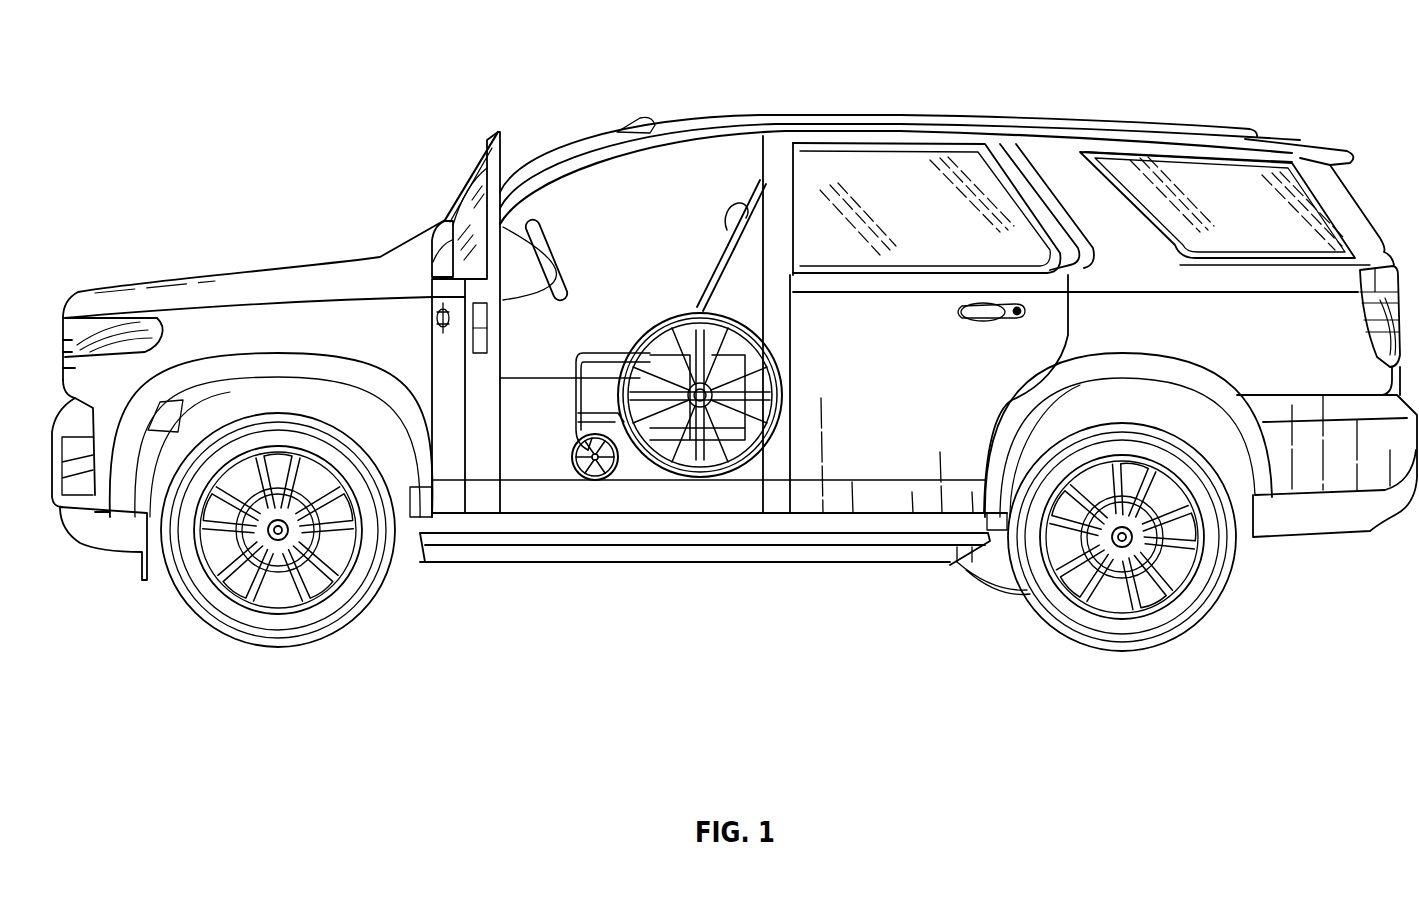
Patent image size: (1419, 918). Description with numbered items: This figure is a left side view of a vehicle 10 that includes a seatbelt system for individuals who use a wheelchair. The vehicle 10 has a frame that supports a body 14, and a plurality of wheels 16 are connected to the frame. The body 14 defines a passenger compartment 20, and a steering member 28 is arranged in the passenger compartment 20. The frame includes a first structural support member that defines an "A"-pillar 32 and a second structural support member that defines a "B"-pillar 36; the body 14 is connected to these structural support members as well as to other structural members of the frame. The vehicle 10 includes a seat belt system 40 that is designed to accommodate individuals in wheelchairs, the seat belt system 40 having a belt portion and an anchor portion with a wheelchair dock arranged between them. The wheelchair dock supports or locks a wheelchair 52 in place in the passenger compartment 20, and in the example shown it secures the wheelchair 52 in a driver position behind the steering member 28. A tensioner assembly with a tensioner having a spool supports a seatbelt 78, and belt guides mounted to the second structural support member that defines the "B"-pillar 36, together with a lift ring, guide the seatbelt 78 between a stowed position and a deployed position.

The vehicle 10 is at (324, 82).
The body 14 is at (299, 263).
The wheels 16 is at (283, 648).
The passenger compartment 20 is at (602, 172).
The steering member 28 is at (550, 263).
The "A"-pillar 32 is at (505, 180).
The "B"-pillar 36 is at (763, 158).
The seat belt system 40 is at (753, 183).
The wheelchair 52 is at (639, 309).
The seatbelt 78 is at (730, 278).